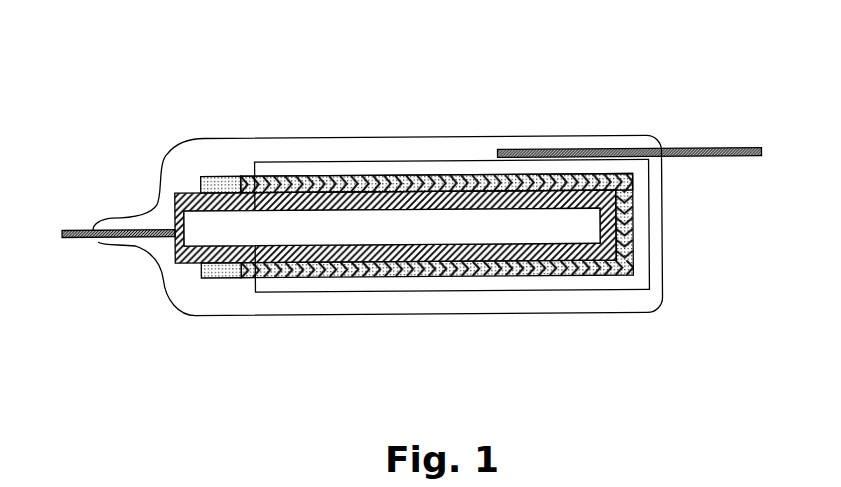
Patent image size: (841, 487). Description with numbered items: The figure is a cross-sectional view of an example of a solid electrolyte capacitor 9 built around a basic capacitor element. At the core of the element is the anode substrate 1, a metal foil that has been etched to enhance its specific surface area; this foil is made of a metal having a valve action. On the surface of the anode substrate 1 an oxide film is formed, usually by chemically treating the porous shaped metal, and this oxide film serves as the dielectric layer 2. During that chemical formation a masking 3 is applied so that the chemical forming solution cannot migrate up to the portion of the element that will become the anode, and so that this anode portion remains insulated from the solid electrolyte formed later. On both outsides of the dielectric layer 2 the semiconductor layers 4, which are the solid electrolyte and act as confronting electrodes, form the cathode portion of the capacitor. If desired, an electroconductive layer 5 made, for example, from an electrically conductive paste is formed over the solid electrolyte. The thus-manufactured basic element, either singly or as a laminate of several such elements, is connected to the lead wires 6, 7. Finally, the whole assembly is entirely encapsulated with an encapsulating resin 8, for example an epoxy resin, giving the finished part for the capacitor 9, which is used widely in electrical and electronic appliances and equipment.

The anode substrate 1 is at (213, 235).
The dielectric layer 2 is at (340, 182).
The masking 3 is at (223, 182).
The semiconductor layer 4 is at (407, 182).
The electroconductive layer 5 is at (175, 241).
The lead wire 6 is at (92, 226).
The lead wire 7 is at (703, 150).
The encapsulating resin 8 is at (563, 298).
The solid electrolyte capacitor 9 is at (606, 104).